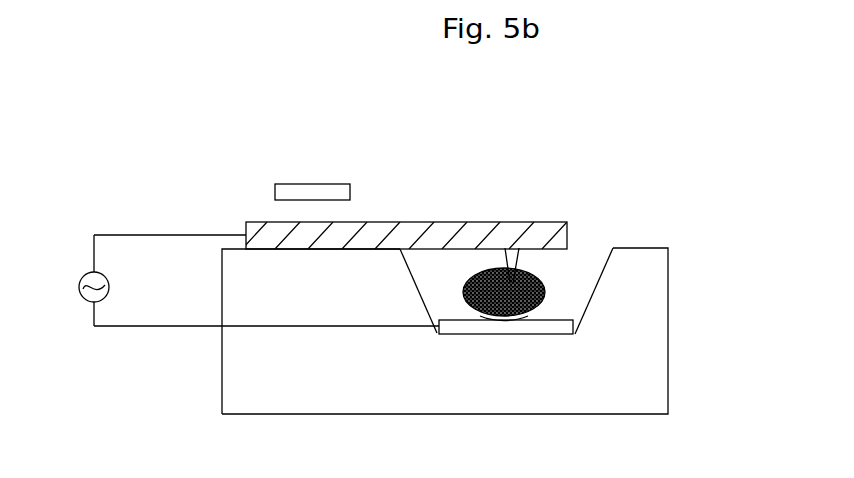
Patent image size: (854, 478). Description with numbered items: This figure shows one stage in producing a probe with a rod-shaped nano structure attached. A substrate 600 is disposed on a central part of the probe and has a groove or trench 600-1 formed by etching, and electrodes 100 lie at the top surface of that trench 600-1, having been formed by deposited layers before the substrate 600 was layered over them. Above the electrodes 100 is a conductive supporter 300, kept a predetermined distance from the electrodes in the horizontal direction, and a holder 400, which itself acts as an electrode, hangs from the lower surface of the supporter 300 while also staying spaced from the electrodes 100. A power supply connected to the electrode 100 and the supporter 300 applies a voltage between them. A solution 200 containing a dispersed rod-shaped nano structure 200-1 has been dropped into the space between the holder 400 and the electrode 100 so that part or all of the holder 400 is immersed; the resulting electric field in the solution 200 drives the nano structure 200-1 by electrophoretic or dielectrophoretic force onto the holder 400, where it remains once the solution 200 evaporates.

The electrode 100 is at (547, 330).
The solution 200 is at (477, 268).
The rod-shaped nano structure 200-1 is at (473, 316).
The supporter 300 is at (411, 232).
The holder 400 is at (518, 259).
The substrate 600 is at (655, 331).
The trench 600-1 is at (594, 290).